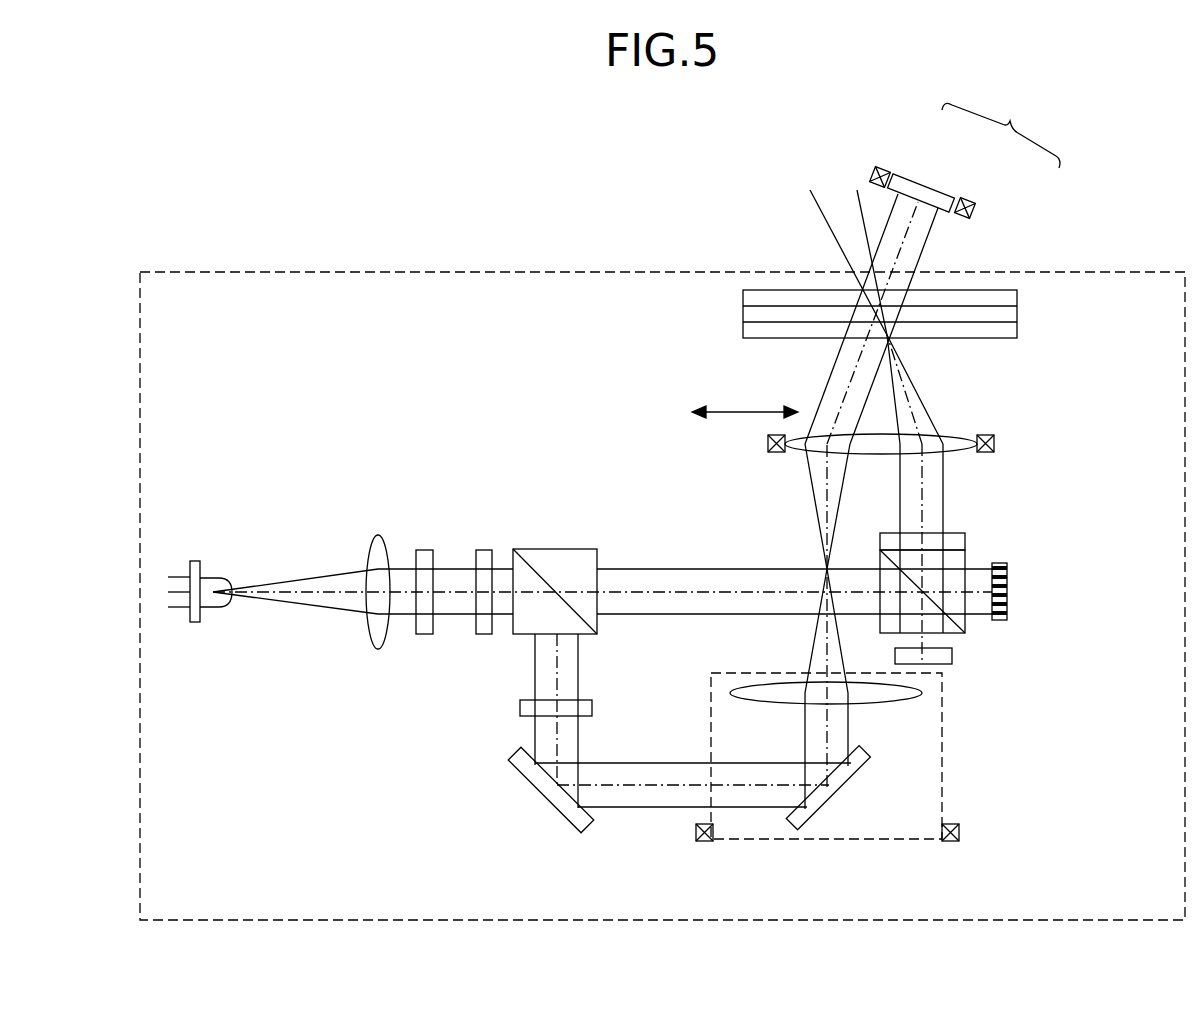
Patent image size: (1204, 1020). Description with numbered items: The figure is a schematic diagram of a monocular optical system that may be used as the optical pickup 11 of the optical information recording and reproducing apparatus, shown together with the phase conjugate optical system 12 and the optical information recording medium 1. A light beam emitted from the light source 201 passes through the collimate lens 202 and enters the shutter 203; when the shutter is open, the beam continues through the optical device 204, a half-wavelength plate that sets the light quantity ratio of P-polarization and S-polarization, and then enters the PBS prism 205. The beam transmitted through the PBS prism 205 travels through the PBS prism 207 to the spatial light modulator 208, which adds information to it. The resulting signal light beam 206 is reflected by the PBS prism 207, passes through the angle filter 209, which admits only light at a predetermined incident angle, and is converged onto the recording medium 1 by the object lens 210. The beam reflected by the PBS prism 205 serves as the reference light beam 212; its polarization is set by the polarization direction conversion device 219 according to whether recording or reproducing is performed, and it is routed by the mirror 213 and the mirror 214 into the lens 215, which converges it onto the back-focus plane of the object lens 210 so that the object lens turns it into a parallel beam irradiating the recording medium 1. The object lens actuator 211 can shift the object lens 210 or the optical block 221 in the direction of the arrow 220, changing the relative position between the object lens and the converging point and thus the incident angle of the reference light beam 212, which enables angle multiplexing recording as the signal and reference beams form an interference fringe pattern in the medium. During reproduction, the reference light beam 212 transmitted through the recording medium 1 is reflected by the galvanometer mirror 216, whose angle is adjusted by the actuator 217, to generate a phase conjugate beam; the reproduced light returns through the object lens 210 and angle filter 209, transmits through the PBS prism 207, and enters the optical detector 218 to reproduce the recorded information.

The optical information recording medium 1 is at (743, 326).
The optical pickup 11 is at (345, 272).
The phase conjugate optical system 12 is at (1001, 127).
The light source 201 is at (225, 577).
The collimate lens 202 is at (378, 534).
The shutter 203 is at (425, 550).
The optical device 204 is at (484, 549).
The PBS prism 205 is at (556, 549).
The signal light beam 206 is at (702, 569).
The PBS prism 207 is at (958, 562).
The spatial light modulator 208 is at (1010, 590).
The angle filter 209 is at (955, 534).
The object lens 210 is at (950, 437).
The object lens actuator 211 is at (995, 443).
The reference light beam 212 is at (650, 773).
The mirror 213 is at (545, 797).
The mirror 214 is at (838, 795).
The lens 215 is at (942, 695).
The galvanometer mirror 216 is at (948, 165).
The actuator 217 is at (975, 206).
The optical detector 218 is at (955, 656).
The polarization direction conversion device 219 is at (520, 708).
The arrow 220 is at (745, 414).
The optical block 221 is at (762, 841).